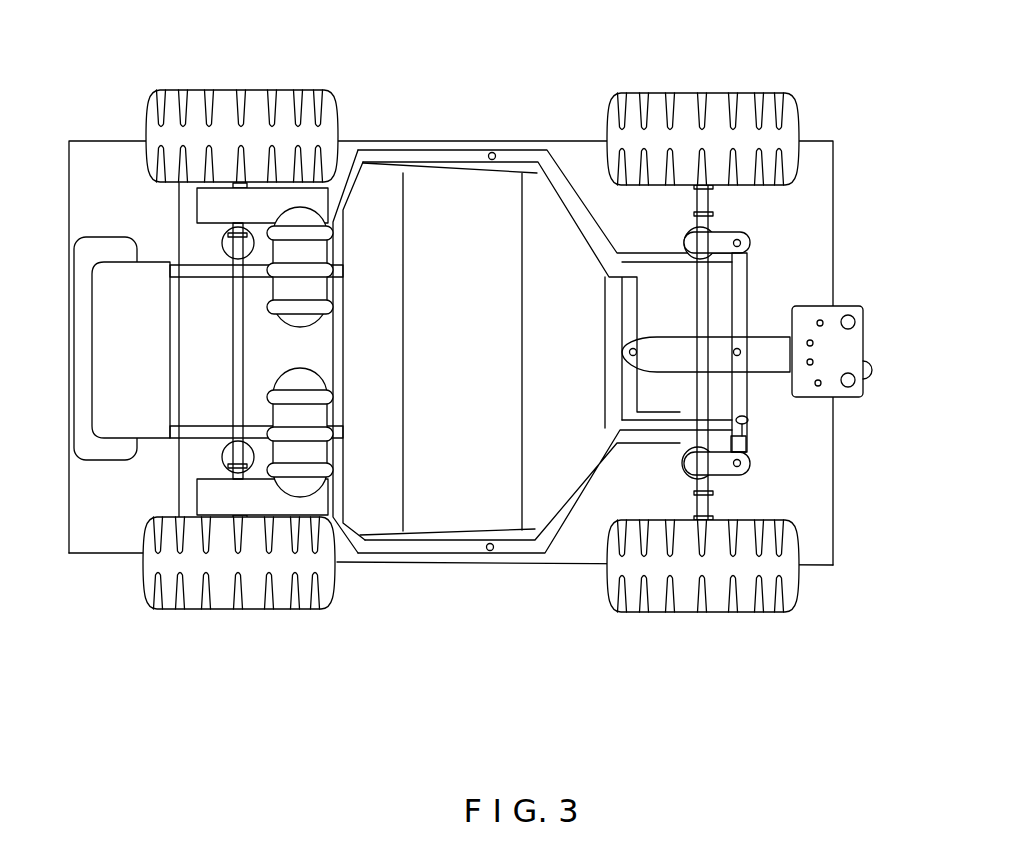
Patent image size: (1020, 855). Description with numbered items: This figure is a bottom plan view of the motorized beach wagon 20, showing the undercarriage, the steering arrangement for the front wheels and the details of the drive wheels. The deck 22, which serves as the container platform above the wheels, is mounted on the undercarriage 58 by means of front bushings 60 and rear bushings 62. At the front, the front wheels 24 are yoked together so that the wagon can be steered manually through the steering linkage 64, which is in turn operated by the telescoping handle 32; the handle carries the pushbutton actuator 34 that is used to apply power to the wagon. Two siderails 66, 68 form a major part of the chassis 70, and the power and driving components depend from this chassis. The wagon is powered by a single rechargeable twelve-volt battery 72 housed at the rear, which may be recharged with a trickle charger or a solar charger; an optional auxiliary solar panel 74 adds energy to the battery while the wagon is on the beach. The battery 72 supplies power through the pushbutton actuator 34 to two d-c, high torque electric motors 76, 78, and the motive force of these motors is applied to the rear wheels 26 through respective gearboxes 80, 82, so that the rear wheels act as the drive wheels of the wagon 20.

The motorized beach wagon 20 is at (418, 130).
The deck 22 is at (588, 543).
The front wheels 24 is at (793, 124).
The rear wheels 26 is at (148, 594).
The telescoping handle 32 is at (852, 313).
The pushbutton actuator 34 is at (866, 359).
The undercarriage 58 is at (527, 160).
The front bushings 60 is at (710, 228).
The rear bushings 62 is at (227, 243).
The steering linkage 64 is at (765, 362).
The siderail 66 is at (455, 162).
The siderail 68 is at (432, 537).
The chassis 70 is at (190, 432).
The battery 72 is at (122, 423).
The auxiliary solar panel 74 is at (93, 253).
The electric motor 76 is at (302, 215).
The electric motor 78 is at (300, 483).
The gearbox 80 is at (287, 197).
The gearbox 82 is at (272, 497).